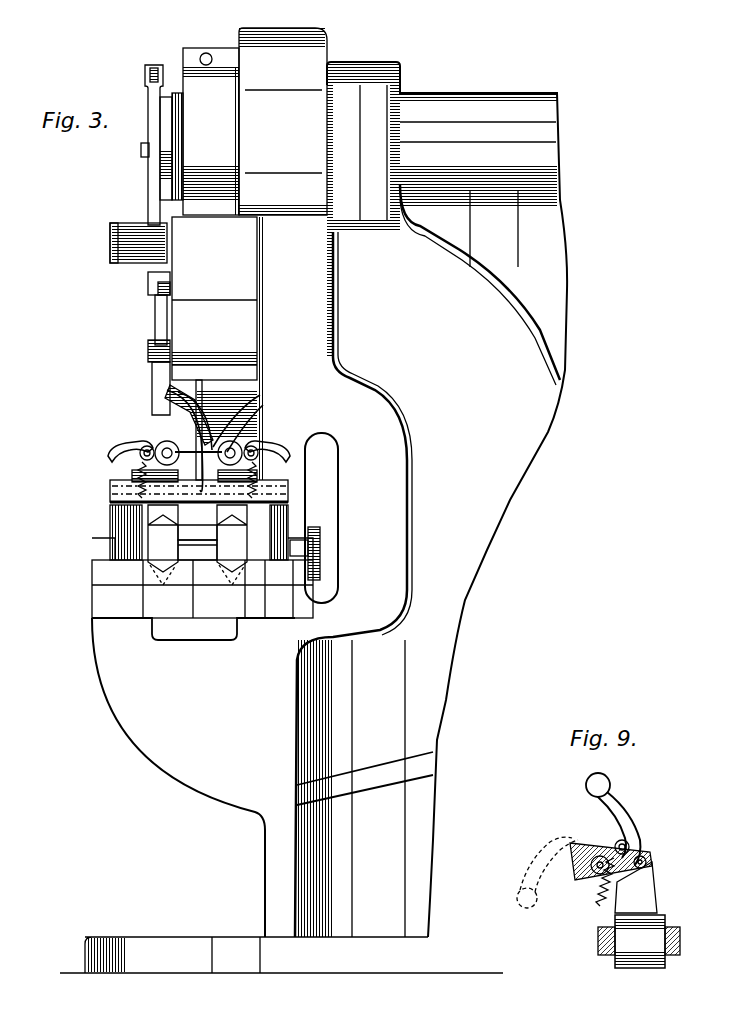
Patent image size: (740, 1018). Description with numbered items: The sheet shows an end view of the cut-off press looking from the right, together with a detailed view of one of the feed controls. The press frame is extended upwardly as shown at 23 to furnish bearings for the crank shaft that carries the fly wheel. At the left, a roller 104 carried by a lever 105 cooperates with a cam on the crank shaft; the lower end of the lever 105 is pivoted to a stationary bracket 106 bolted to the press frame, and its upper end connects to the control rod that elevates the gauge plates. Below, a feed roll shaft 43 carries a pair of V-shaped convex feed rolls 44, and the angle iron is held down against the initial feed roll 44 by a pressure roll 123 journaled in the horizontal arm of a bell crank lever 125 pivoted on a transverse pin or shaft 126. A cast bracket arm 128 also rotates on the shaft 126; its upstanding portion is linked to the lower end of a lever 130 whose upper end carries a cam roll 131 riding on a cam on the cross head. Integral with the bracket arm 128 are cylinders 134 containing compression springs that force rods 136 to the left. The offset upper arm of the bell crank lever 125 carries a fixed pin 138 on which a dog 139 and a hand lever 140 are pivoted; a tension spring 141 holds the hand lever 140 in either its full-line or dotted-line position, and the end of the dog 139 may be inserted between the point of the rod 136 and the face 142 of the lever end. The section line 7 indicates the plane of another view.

In FIG. 3, the section line 7 is at (165, 640).
In FIG. 3, the upward extension of press frame 23 is at (292, 34).
In FIG. 3, the feed roll shaft 43 is at (196, 560).
In FIG. 3, the feed rolls 44 is at (150, 540).
In FIG. 3, the roller 104 is at (160, 172).
In FIG. 3, the lever 105 is at (148, 98).
In FIG. 3, the stationary bracket 106 is at (155, 66).
In FIG. 3, the pressure roll 123 is at (226, 516).
In FIG. 9, the bell crank lever 125 is at (650, 900).
In FIG. 3, the pin or shaft 126 is at (110, 490).
In FIG. 9, the pin or shaft 126 is at (615, 942).
In FIG. 3, the bracket arm 128 is at (198, 440).
In FIG. 3, the lever 130 is at (152, 332).
In FIG. 3, the cam roll 131 is at (160, 290).
In FIG. 3, the cylinders 134 is at (215, 447).
In FIG. 3, the rods 136 is at (132, 480).
In FIG. 9, the fixed pin 138 is at (598, 870).
In FIG. 3, the dog 139 is at (145, 442).
In FIG. 9, the dog 139 is at (648, 857).
In FIG. 3, the hand lever 140 is at (116, 442).
In FIG. 9, the hand lever 140 is at (618, 806).
In FIG. 3, the tension spring 141 is at (124, 468).
In FIG. 9, the tension spring 141 is at (598, 905).
In FIG. 9, the face of bell crank lever end 142 is at (652, 858).